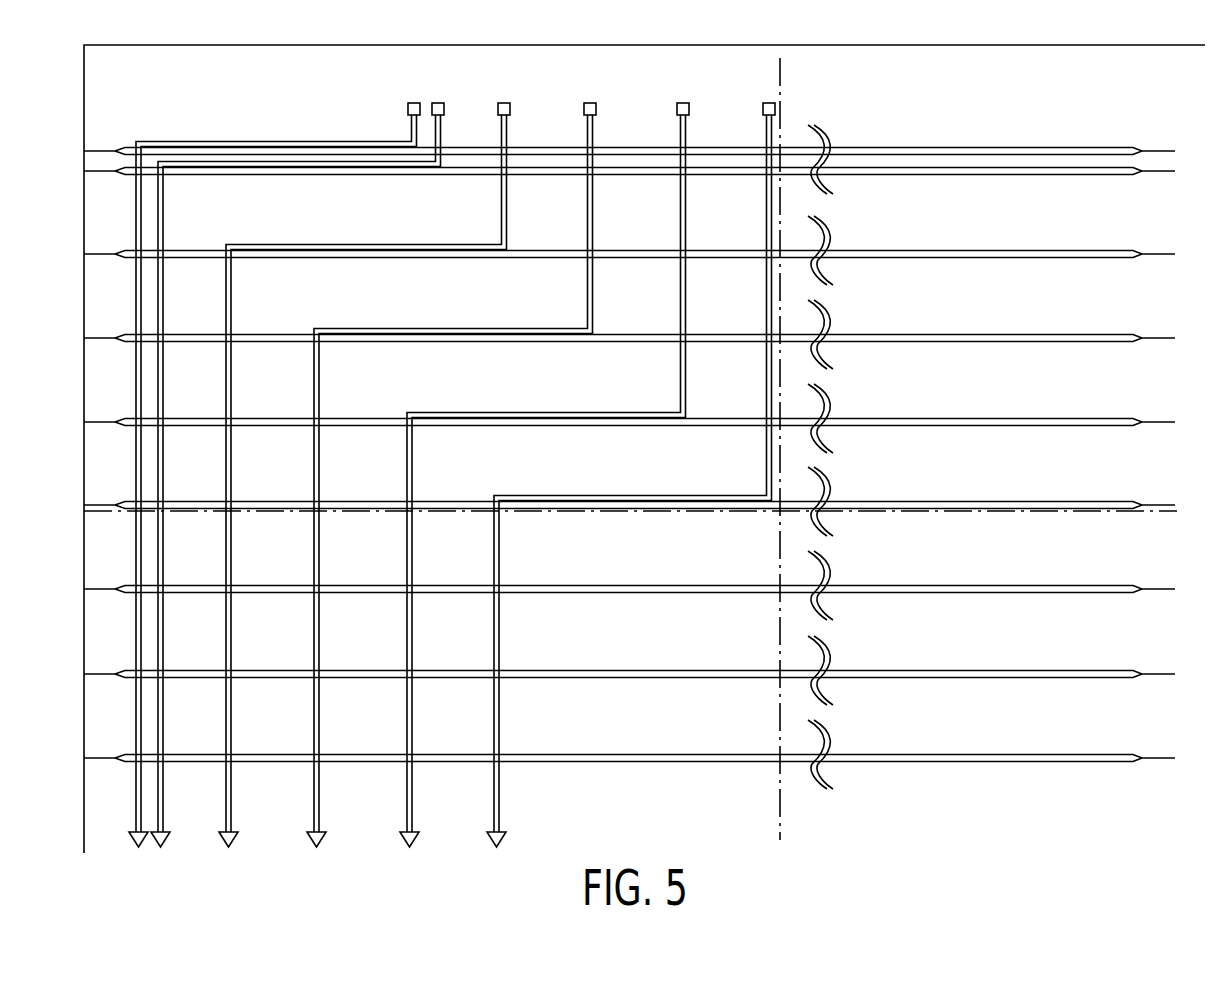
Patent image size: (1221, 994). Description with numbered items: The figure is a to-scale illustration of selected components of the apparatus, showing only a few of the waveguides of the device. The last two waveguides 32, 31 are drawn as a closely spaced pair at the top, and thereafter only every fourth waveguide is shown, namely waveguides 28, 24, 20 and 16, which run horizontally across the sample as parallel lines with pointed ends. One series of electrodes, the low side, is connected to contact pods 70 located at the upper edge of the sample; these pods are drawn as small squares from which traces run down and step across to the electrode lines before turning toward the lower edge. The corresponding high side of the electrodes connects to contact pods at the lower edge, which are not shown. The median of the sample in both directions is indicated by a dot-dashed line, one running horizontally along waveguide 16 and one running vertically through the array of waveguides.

The contact pods 70 is at (583, 110).
The waveguide 32 is at (1085, 146).
The waveguide 31 is at (1090, 175).
The waveguide 28 is at (1003, 250).
The waveguide 24 is at (973, 334).
The waveguide 20 is at (937, 418).
The waveguide 16 is at (878, 501).